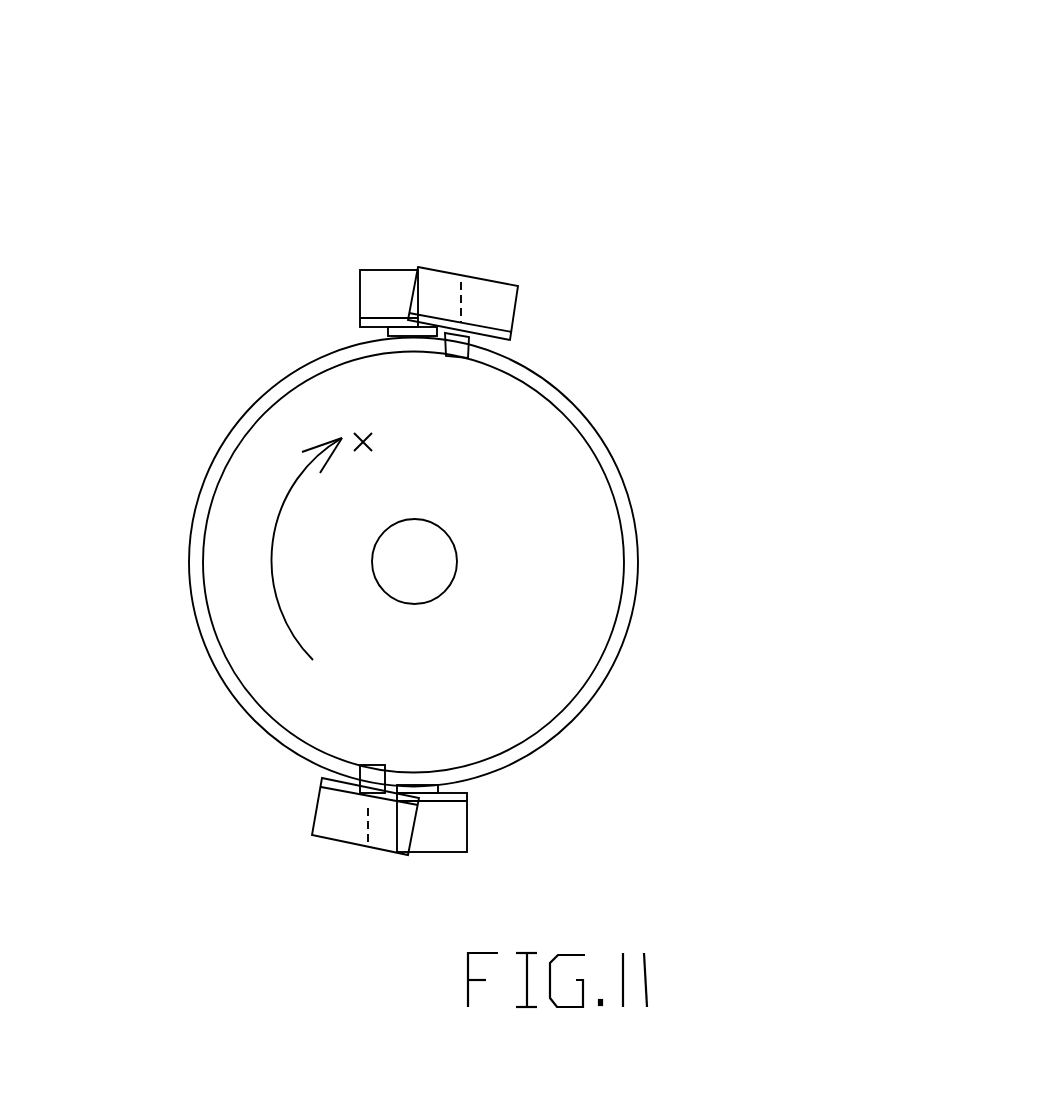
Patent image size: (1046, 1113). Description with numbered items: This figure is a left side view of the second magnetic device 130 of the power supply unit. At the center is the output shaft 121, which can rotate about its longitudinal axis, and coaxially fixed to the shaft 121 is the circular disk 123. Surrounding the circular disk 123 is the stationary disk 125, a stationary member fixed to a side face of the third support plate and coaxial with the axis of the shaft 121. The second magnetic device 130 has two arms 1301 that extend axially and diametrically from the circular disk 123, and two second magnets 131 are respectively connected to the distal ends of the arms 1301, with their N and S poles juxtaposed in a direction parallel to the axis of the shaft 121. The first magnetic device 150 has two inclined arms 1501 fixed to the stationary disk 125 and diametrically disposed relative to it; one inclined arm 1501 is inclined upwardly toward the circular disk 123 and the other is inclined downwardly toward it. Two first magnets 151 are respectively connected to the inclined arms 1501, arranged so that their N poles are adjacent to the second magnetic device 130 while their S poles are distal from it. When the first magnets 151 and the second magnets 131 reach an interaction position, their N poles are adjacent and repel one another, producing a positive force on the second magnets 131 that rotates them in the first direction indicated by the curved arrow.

The output shaft 121 is at (423, 571).
The circular disk 123 is at (500, 438).
The stationary disk 125 is at (623, 472).
The second magnetic device 130 is at (572, 207).
The second magnet 131 is at (492, 318).
The arm 1301 is at (457, 349).
The first magnetic device 150 is at (246, 182).
The first magnet 151 is at (390, 277).
The inclined arm 1501 is at (410, 332).